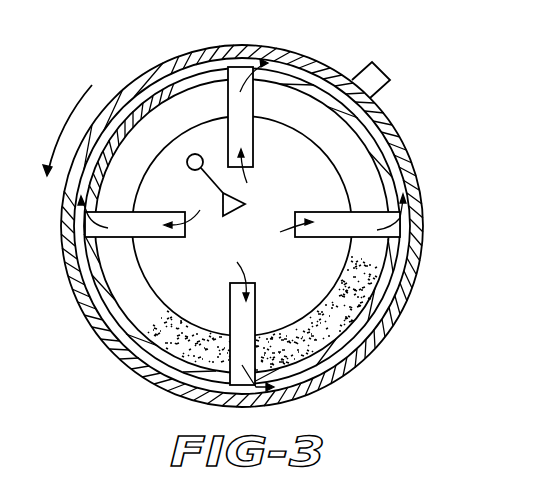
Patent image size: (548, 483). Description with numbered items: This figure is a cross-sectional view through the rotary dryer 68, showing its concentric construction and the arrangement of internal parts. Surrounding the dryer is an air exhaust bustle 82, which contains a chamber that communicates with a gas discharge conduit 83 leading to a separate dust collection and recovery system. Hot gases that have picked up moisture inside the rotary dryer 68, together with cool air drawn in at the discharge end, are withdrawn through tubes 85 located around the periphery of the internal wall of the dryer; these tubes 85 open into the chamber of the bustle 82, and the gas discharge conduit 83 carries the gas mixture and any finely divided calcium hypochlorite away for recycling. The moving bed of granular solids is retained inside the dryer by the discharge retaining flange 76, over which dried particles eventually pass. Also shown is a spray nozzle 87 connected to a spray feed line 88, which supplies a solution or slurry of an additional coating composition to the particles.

The rotary dryer 68 is at (393, 325).
The air exhaust bustle 82 is at (186, 50).
The discharge retaining flange 76 is at (315, 113).
The tubes 85 is at (254, 150).
The gas discharge conduit 83 is at (386, 84).
The spray feed line 88 is at (190, 168).
The spray nozzle 87 is at (246, 204).